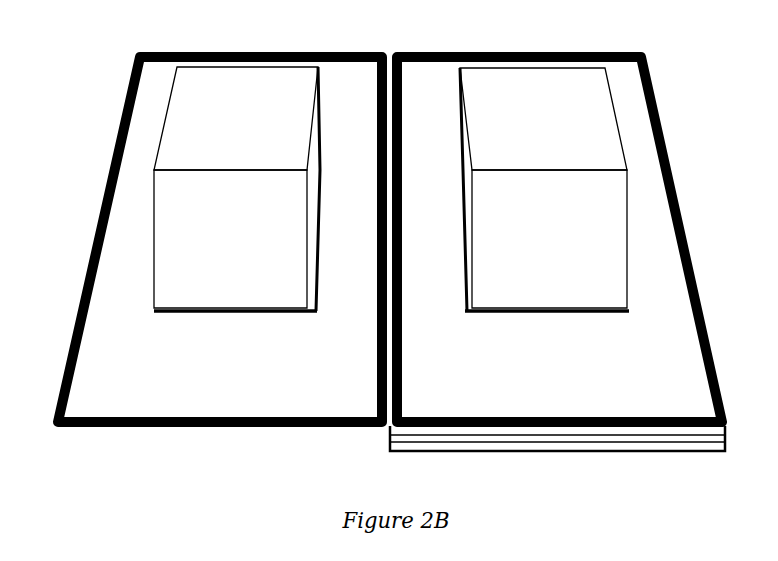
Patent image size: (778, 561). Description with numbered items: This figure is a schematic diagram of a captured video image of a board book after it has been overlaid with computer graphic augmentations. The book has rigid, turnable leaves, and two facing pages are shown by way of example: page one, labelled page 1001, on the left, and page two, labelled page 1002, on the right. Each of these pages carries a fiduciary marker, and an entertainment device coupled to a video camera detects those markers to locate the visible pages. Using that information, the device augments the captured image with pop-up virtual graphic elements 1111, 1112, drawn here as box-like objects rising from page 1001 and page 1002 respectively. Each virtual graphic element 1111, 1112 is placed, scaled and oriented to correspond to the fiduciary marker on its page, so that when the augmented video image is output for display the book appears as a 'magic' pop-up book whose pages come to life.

The page 1001 is at (263, 189).
The page 1002 is at (520, 189).
The pop-up virtual graphic element 1111 is at (151, 87).
The pop-up virtual graphic element 1112 is at (631, 89).